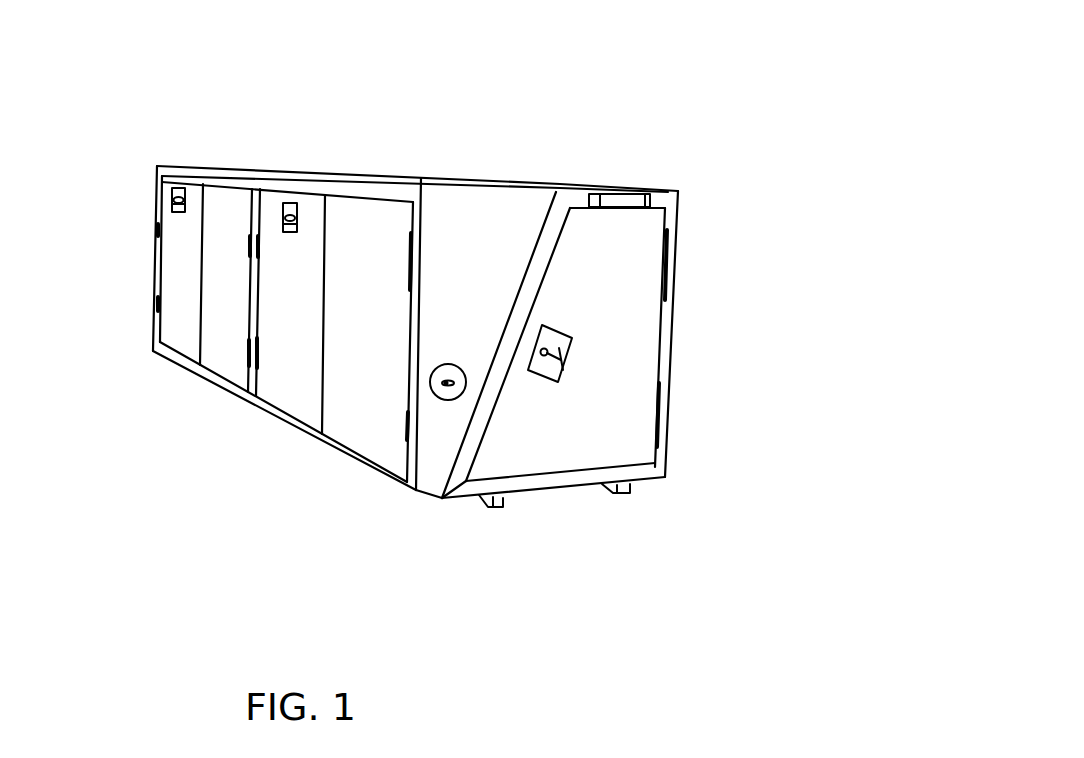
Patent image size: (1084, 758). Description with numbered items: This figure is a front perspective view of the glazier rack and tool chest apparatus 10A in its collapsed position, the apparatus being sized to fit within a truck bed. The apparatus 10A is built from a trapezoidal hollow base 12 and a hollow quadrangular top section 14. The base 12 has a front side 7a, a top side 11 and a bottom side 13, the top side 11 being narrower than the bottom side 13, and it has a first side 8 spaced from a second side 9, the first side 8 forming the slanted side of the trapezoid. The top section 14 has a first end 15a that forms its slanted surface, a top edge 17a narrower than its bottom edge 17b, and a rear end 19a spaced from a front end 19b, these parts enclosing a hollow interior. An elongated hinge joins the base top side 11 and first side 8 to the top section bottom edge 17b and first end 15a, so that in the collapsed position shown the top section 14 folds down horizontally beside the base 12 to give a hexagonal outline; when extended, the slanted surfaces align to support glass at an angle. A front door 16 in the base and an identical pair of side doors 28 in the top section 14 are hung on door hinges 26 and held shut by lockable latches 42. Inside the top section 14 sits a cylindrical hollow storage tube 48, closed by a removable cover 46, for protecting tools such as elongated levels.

The glazier rack and tool chest apparatus 10A is at (290, 523).
The front side 7a is at (656, 242).
The first side 8 is at (543, 235).
The second side 9 is at (663, 474).
The top side 11 is at (679, 192).
The trapezoidal hollow base 12 is at (698, 216).
The bottom side 13 is at (517, 494).
The top section 14 is at (564, 166).
The first end 15a is at (485, 355).
The front door 16 is at (655, 276).
The top edge 17a is at (417, 490).
The bottom edge 17b is at (428, 182).
The rear end 19a is at (157, 180).
The front end 19b is at (502, 203).
The door hinges 26 is at (250, 222).
The side doors 28 is at (340, 418).
The latches 42 is at (178, 187).
The removable cover 46 is at (478, 422).
The storage tube 48 is at (465, 392).